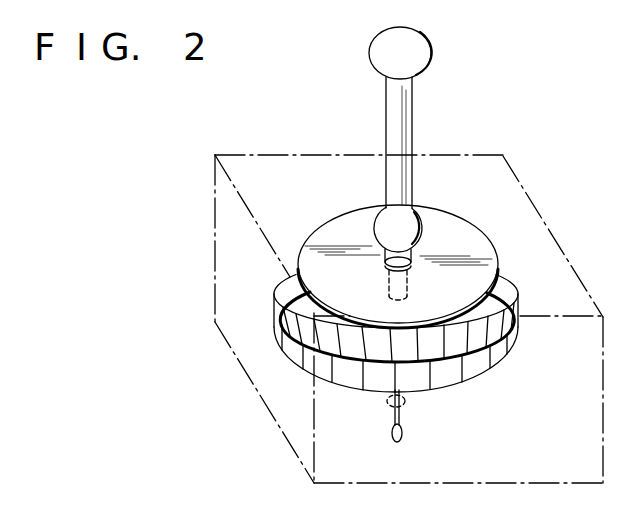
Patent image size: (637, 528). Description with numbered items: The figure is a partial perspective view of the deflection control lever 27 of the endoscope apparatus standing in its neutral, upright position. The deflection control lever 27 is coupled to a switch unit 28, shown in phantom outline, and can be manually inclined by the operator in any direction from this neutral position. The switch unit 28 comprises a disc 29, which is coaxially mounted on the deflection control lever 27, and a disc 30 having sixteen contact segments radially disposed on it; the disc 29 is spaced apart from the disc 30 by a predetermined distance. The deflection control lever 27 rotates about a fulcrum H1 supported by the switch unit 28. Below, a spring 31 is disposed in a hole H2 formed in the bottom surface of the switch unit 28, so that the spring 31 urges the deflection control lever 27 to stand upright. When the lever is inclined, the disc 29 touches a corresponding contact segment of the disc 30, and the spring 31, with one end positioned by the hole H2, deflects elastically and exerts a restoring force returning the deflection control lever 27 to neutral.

The deflection control lever 27 is at (405, 115).
The switch unit 28 is at (552, 230).
The disc 29 is at (457, 233).
The disc 30 is at (502, 350).
The spring 31 is at (402, 415).
The fulcrum H1 is at (370, 227).
The hole H2 is at (388, 412).